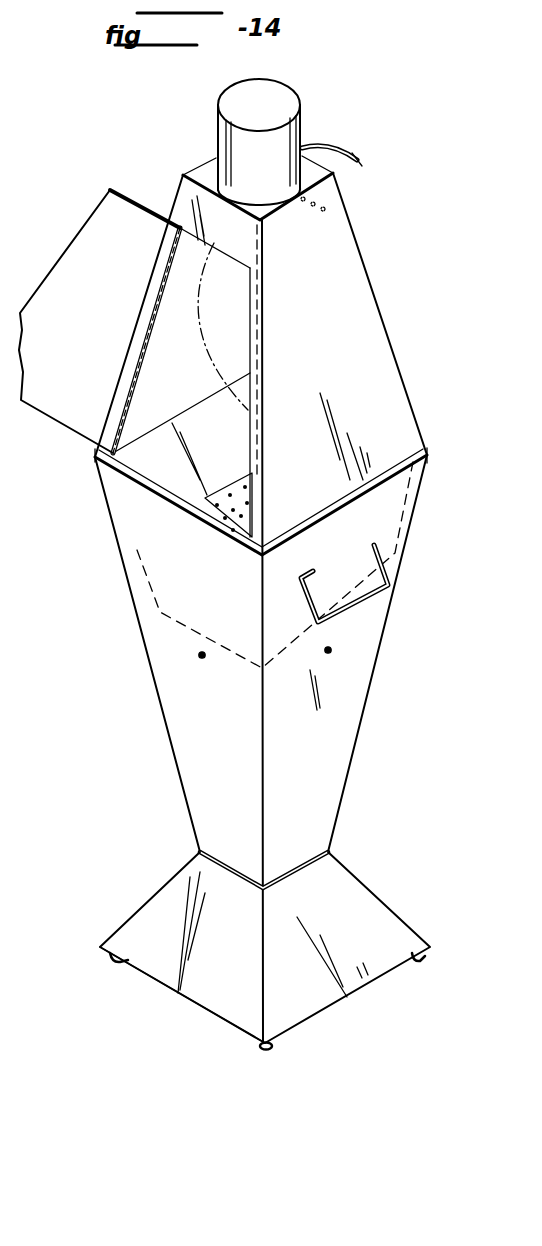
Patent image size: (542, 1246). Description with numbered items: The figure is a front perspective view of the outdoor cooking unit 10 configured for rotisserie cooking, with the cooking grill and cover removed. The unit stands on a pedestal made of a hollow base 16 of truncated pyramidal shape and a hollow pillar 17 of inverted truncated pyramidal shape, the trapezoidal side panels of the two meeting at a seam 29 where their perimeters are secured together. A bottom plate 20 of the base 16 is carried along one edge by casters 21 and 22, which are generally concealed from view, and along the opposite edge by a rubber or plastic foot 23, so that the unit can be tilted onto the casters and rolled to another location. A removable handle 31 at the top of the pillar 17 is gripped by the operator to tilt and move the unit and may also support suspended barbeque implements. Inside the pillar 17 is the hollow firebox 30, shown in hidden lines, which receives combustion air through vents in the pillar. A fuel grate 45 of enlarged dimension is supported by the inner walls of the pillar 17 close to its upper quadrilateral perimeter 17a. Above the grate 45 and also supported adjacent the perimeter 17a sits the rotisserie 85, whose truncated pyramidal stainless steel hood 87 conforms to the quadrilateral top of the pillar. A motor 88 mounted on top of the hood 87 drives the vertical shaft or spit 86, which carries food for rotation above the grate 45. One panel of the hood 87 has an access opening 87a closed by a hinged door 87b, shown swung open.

The outdoor cooking unit 10 is at (115, 757).
The hollow base 16 is at (338, 1000).
The hollow pillar 17 is at (152, 705).
The upper quadrilateral perimeter 17a is at (117, 475).
The bottom plate 20 is at (203, 1010).
The caster 21 is at (118, 966).
The caster 22 is at (270, 1048).
The foot 23 is at (418, 963).
The seam between housing and base 29 is at (332, 853).
The firebox 30 is at (166, 624).
The removable handle 31 is at (372, 598).
The fuel grate 45 is at (232, 480).
The rotisserie 85 is at (391, 162).
The vertical shaft or spit 86 is at (268, 295).
The rotisserie hood 87 is at (350, 287).
The access opening 87a is at (190, 237).
The hinged door 87b is at (88, 242).
The motor 88 is at (228, 106).